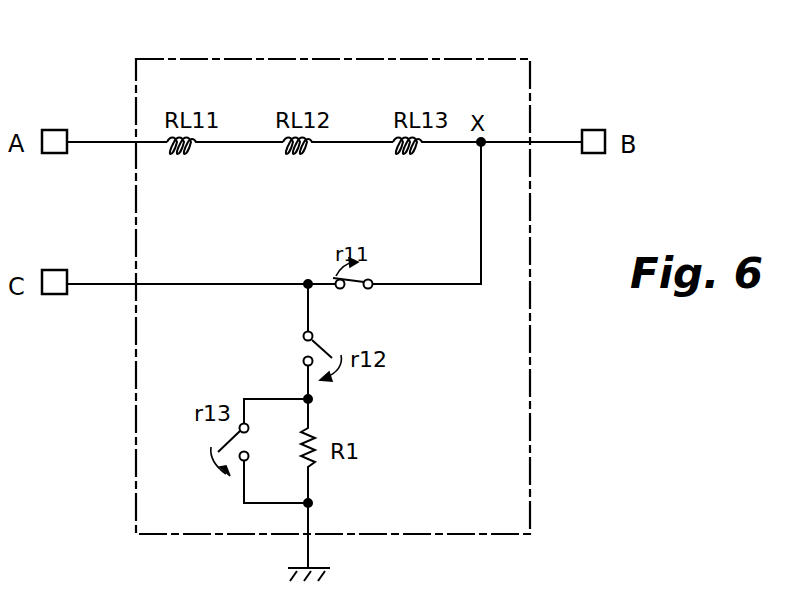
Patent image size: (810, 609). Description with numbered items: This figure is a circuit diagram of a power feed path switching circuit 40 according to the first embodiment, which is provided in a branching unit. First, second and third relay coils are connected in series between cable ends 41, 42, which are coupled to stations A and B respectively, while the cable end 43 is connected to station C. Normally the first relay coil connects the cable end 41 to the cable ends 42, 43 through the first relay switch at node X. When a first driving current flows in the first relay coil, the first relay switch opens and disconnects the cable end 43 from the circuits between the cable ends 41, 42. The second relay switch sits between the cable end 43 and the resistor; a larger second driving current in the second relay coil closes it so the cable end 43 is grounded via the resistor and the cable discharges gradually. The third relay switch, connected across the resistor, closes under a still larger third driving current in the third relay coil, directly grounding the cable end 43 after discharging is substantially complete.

The power feed path switching circuit 40 is at (487, 59).
The cable end 41 is at (49, 130).
The cable end 42 is at (589, 130).
The cable end 43 is at (50, 270).